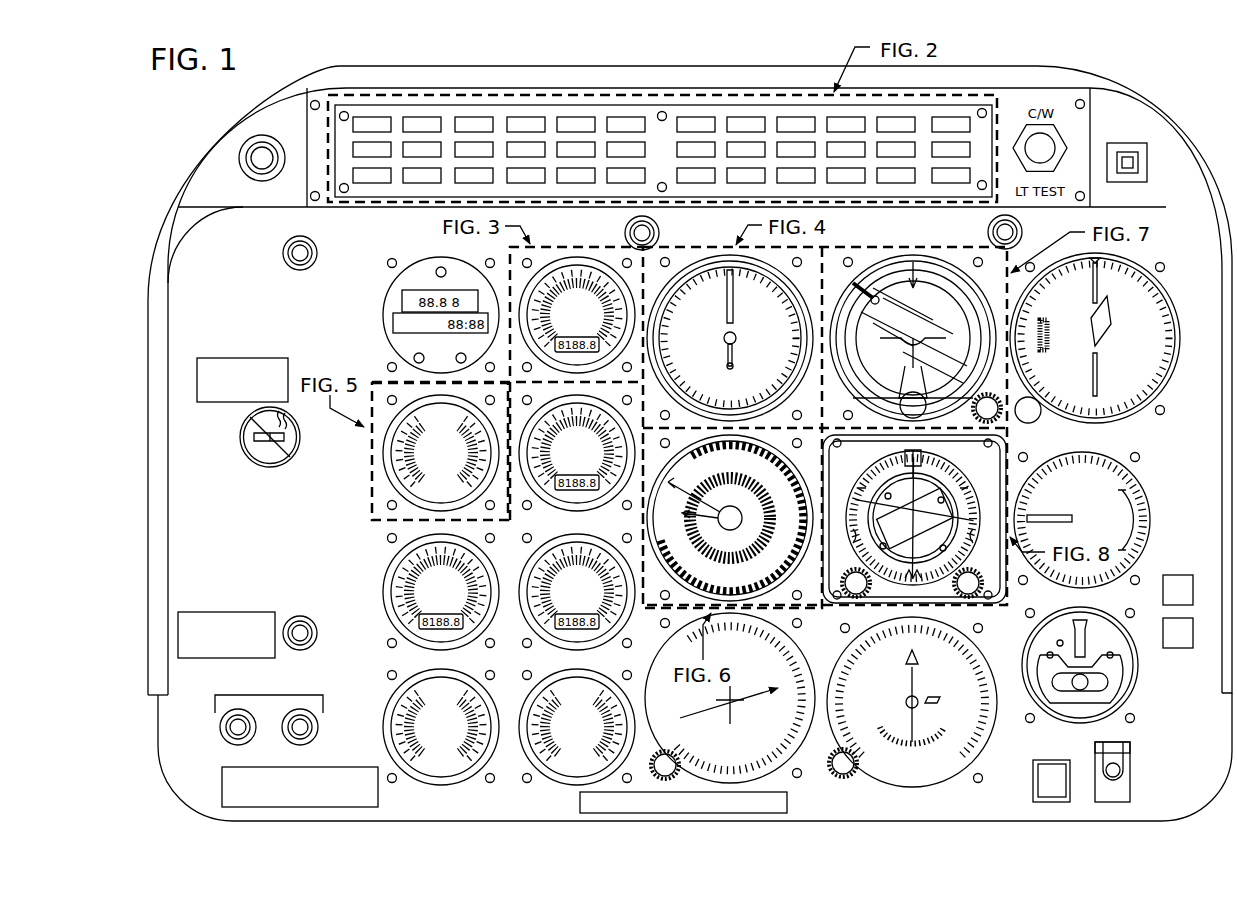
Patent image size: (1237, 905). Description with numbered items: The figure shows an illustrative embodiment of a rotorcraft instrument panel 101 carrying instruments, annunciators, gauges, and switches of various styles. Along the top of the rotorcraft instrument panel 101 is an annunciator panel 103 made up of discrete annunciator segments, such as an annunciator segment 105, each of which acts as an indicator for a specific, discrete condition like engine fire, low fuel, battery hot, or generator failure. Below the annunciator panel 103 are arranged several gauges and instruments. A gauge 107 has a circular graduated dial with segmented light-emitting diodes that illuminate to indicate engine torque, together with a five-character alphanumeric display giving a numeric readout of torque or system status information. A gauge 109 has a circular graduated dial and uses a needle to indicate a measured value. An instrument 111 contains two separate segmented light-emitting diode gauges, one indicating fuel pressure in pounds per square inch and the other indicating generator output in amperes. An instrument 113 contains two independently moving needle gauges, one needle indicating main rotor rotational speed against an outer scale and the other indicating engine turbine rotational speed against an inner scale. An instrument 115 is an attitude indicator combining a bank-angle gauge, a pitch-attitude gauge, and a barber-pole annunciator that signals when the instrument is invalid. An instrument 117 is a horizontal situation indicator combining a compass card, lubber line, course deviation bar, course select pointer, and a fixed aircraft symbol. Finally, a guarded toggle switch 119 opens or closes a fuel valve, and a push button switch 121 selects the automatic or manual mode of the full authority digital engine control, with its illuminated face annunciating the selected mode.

The rotorcraft instrument panel 101 is at (1184, 127).
The annunciator panel 103 is at (663, 144).
The annunciator segment 105 is at (373, 116).
The gauge 107 is at (566, 257).
The gauge 109 is at (702, 258).
The instrument 111 is at (380, 466).
The instrument 113 is at (812, 607).
The instrument 115 is at (926, 251).
The instrument 117 is at (1000, 457).
The guarded toggle switch 119 is at (1130, 770).
The push button switch 121 is at (1033, 790).